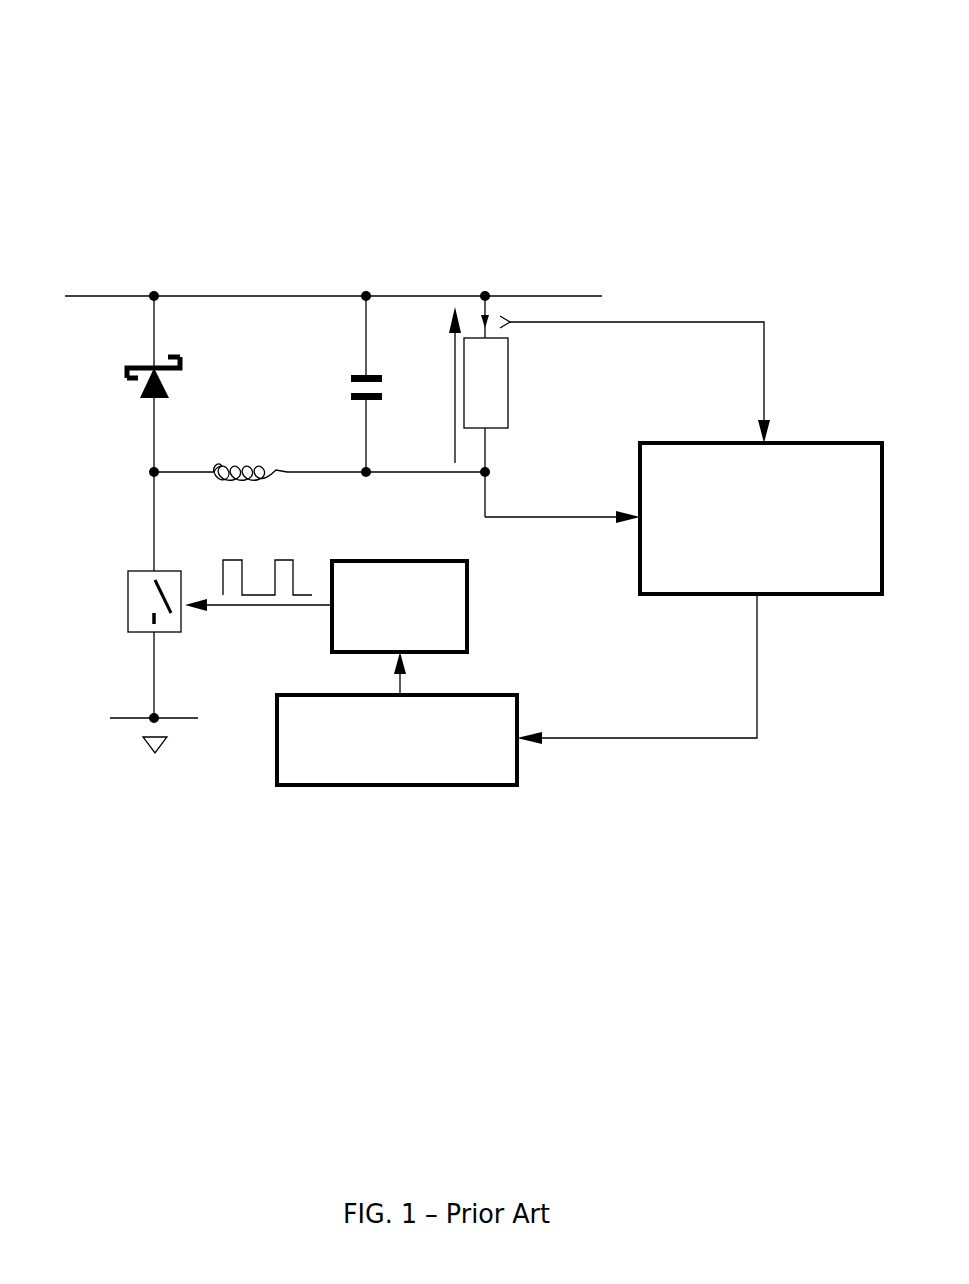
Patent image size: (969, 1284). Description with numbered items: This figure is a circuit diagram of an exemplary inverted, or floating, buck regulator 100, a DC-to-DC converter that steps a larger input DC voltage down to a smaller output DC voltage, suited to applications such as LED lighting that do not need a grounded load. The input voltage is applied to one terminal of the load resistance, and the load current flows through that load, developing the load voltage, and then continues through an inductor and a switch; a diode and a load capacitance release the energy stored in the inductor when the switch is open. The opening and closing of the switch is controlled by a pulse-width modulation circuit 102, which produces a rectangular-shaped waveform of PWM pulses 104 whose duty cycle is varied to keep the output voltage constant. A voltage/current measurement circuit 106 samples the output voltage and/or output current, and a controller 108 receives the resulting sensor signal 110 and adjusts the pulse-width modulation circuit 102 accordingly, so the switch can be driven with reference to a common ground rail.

The inverted buck regulator 100 is at (114, 92).
The pulse-width modulation circuit 102 is at (467, 595).
The PWM pulses 104 is at (238, 560).
The voltage/current measurement circuit 106 is at (851, 596).
The controller 108 is at (343, 785).
The sensor signal 110 is at (658, 738).